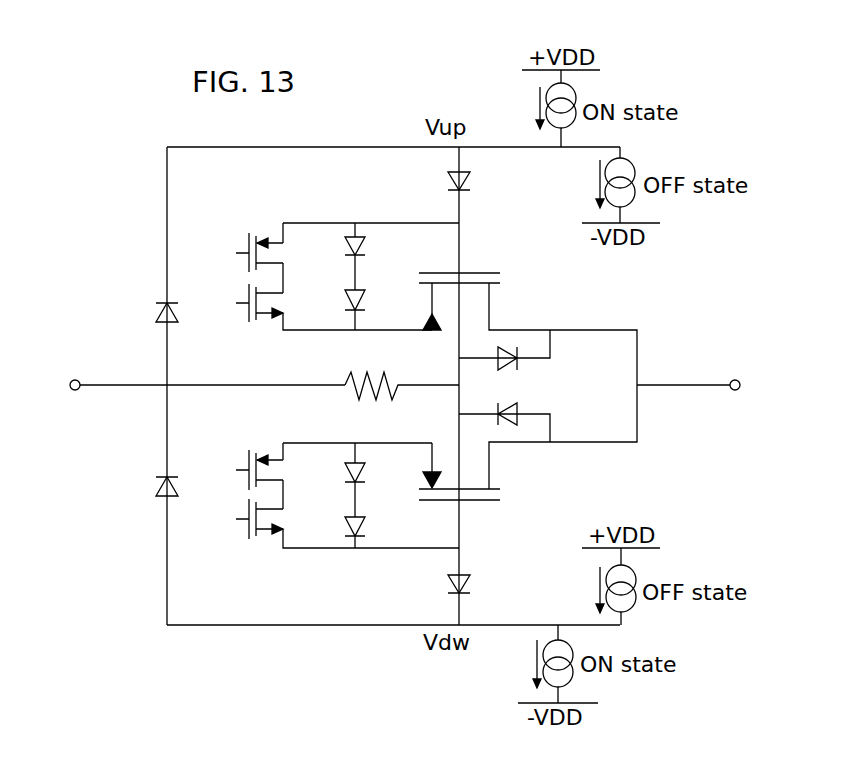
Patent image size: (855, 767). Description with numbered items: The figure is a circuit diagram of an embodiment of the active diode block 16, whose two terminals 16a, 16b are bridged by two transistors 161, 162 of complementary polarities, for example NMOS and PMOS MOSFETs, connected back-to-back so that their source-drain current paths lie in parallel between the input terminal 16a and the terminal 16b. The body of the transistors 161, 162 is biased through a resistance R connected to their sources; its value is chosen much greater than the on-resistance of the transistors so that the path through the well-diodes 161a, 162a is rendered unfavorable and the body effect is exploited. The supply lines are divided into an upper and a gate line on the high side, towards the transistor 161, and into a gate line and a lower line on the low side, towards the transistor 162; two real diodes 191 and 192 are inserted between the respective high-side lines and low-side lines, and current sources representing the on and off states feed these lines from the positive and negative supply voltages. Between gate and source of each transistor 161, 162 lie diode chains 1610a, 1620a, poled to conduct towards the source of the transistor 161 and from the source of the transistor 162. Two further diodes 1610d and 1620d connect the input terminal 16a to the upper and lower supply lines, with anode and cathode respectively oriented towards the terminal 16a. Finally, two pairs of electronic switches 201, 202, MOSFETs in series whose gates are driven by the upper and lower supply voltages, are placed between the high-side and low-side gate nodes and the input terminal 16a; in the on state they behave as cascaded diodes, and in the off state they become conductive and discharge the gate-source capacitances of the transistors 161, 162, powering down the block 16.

The block 16 is at (86, 196).
The input terminal 16a is at (77, 378).
The terminal 16b is at (744, 378).
The resistance R is at (372, 375).
The diode 191 is at (472, 186).
The diode 192 is at (473, 588).
The transistor 161 is at (479, 265).
The transistor 162 is at (478, 506).
The well-diode 161a is at (520, 367).
The well-diode 162a is at (520, 406).
The pair of electronic switches 201 is at (223, 268).
The pair of electronic switches 202 is at (220, 485).
The diode chain 1610a is at (345, 268).
The diode chain 1620a is at (347, 498).
The diode 1610d is at (157, 308).
The diode 1620d is at (160, 496).